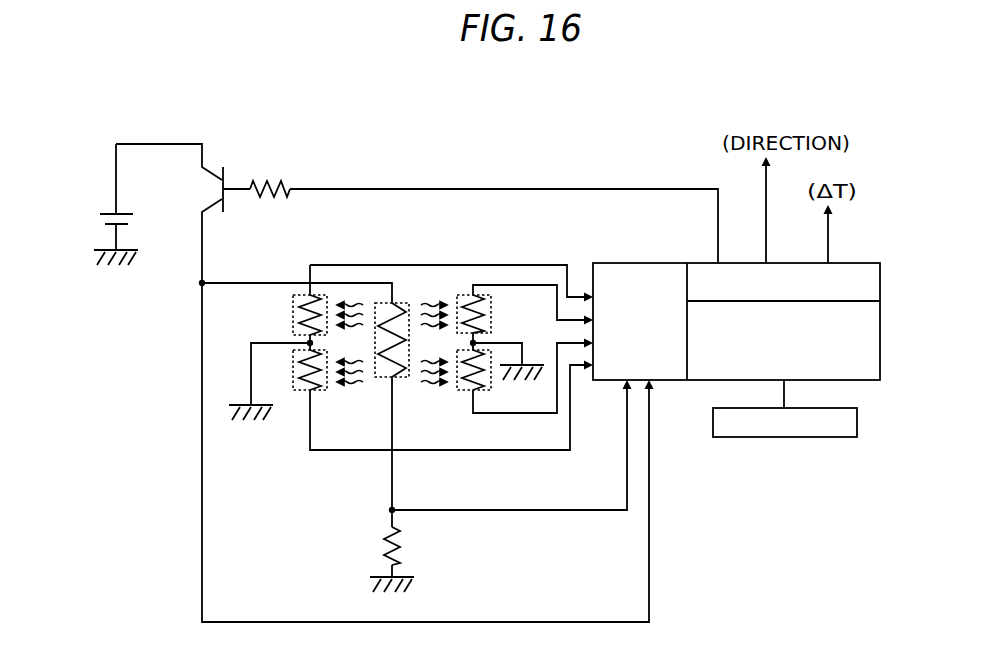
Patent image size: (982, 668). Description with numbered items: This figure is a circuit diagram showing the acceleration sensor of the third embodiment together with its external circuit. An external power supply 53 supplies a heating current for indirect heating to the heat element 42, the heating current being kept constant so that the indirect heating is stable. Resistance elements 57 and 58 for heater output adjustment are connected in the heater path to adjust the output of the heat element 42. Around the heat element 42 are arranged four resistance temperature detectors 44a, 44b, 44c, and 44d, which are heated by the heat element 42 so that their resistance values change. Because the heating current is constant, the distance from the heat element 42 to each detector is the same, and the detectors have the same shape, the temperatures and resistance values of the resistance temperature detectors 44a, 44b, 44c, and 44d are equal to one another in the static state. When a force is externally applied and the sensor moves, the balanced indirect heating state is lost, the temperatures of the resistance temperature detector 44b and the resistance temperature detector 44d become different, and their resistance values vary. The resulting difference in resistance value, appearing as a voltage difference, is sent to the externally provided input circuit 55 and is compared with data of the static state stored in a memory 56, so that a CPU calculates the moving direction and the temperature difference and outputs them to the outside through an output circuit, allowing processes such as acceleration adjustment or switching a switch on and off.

The external power supply 53 is at (98, 217).
The resistance element for heater output adjustment 57 is at (290, 185).
The resistance temperature detector 44a is at (293, 318).
The resistance temperature detector 44b is at (300, 392).
The resistance temperature detector 44c is at (491, 314).
The resistance temperature detector 44d is at (461, 392).
The heat element 42 is at (382, 380).
The resistance element for heater output adjustment 58 is at (403, 548).
The input circuit 55 is at (882, 292).
The memory 56 is at (752, 440).